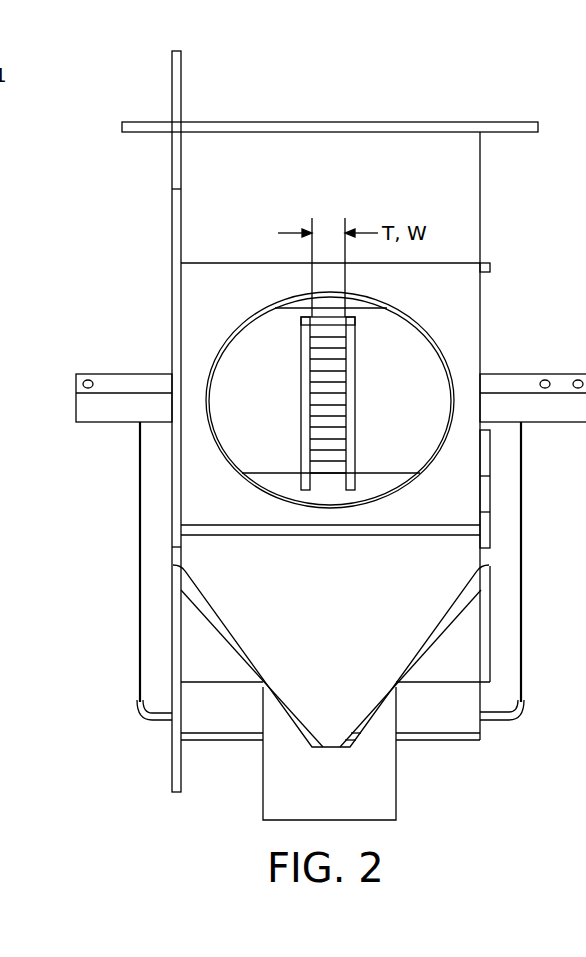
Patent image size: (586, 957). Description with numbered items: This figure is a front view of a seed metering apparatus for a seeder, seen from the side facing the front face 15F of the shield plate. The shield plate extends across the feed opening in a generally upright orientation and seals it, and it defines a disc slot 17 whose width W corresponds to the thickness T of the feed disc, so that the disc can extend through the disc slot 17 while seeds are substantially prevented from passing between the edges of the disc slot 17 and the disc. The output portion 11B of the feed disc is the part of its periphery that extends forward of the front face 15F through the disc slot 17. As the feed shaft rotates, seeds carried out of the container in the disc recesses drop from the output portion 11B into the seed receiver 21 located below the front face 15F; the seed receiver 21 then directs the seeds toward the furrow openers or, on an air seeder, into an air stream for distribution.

The output portion 11B is at (322, 372).
The front face 15F is at (242, 442).
The disc slot 17 is at (330, 477).
The seed receiver 21 is at (397, 777).